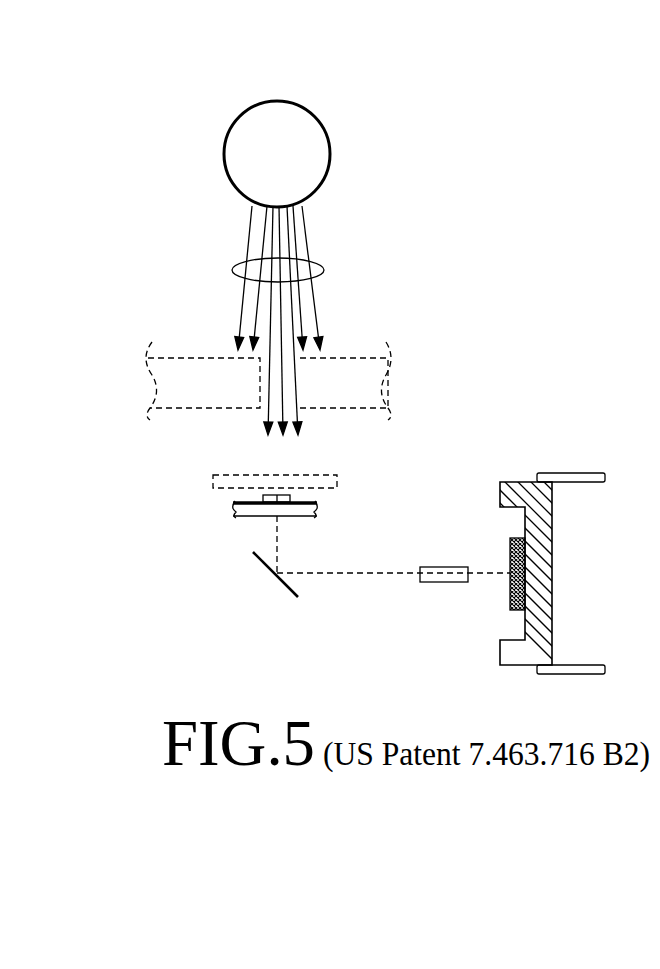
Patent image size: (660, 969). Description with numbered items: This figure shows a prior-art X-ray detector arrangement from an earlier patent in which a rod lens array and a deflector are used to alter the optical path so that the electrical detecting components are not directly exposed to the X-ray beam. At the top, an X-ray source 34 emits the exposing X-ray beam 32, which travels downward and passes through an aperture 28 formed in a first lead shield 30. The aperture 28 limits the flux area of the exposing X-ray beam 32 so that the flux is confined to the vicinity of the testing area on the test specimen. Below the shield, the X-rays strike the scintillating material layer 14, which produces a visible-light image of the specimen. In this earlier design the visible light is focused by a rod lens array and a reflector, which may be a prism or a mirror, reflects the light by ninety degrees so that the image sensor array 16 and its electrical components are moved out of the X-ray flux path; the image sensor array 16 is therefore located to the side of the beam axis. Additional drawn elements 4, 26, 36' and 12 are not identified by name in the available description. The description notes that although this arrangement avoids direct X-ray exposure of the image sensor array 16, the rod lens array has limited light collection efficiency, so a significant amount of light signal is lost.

The optical measuring system 4 is at (150, 122).
The X-ray source 34 is at (322, 127).
The exposing X-ray beam 32 is at (322, 268).
The first lead shield 30 is at (190, 358).
The aperture 28 is at (298, 408).
The measurement plane 26 is at (248, 475).
The scintillating material layer 14 is at (263, 495).
The sample stage 36' is at (244, 532).
The lens 12 is at (445, 582).
The image sensor array 16 is at (508, 557).